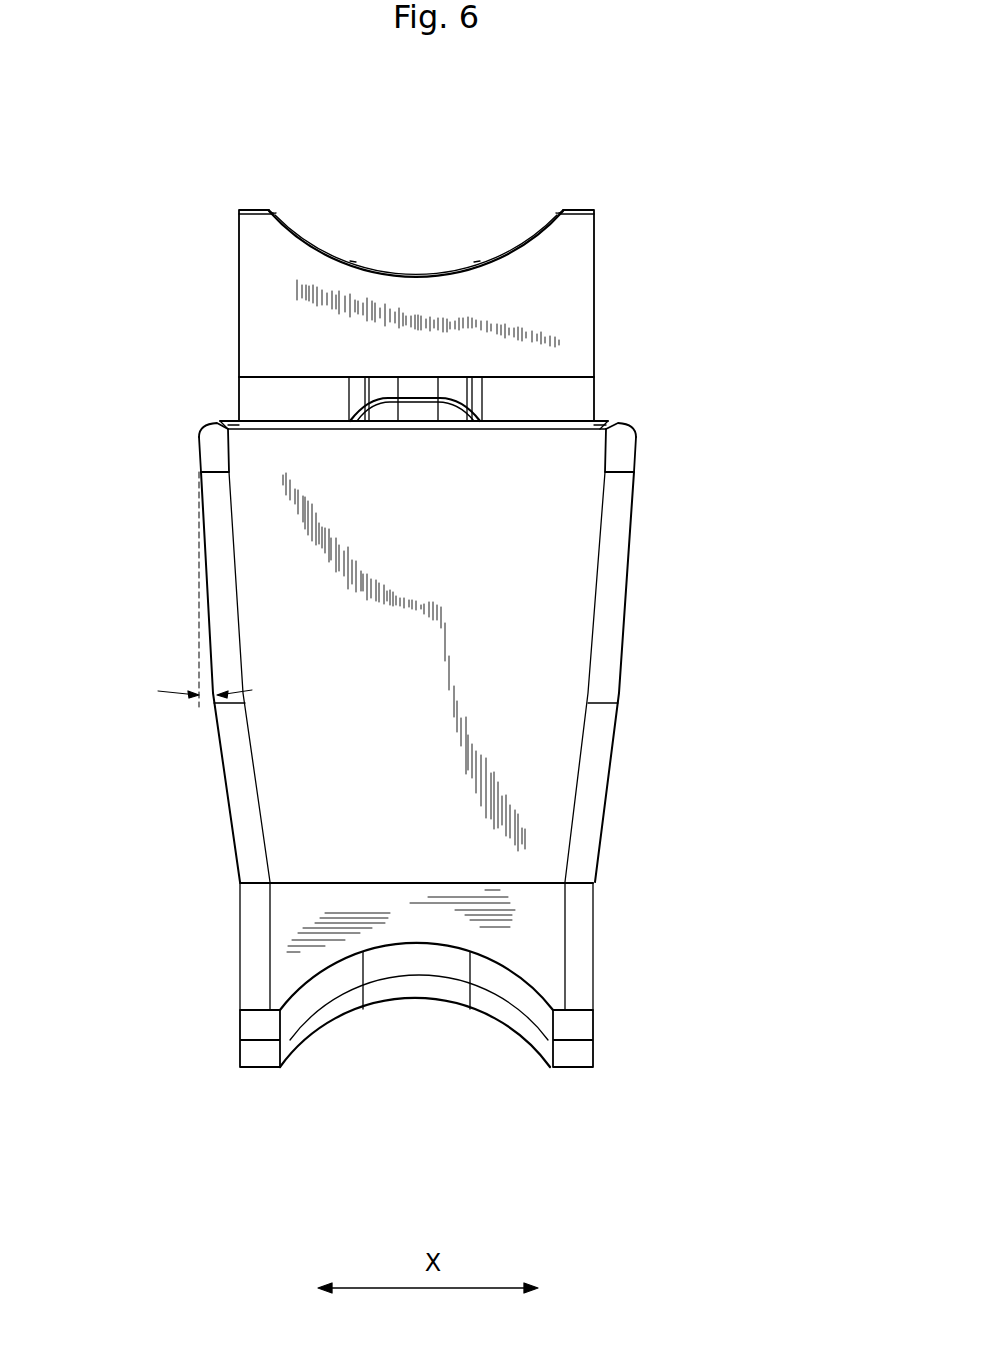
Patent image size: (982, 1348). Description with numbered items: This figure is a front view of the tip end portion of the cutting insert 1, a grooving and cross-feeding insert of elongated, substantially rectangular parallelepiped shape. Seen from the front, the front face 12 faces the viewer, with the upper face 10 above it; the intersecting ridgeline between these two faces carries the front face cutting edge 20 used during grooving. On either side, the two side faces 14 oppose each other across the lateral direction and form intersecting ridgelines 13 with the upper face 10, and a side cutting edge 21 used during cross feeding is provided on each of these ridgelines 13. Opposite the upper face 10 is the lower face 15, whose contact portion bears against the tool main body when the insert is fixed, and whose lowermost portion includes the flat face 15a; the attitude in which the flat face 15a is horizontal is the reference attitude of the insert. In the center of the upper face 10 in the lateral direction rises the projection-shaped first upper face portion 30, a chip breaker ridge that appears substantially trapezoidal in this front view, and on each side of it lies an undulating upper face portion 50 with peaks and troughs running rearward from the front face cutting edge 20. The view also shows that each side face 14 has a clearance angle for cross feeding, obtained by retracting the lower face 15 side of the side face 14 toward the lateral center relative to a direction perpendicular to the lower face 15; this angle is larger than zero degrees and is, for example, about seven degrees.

The cutting insert 1 is at (632, 140).
The upper face 10 is at (513, 420).
The front face 12 is at (530, 783).
The intersecting ridgeline 13 is at (197, 430).
The side face 14 is at (687, 637).
The lower face 15 is at (547, 1067).
The flat face 15a is at (258, 1067).
The front face cutting edge 20 is at (543, 420).
The side cutting edge 21 is at (198, 428).
The first upper face portion 30 is at (418, 397).
The undulating upper face portion 50 is at (273, 420).